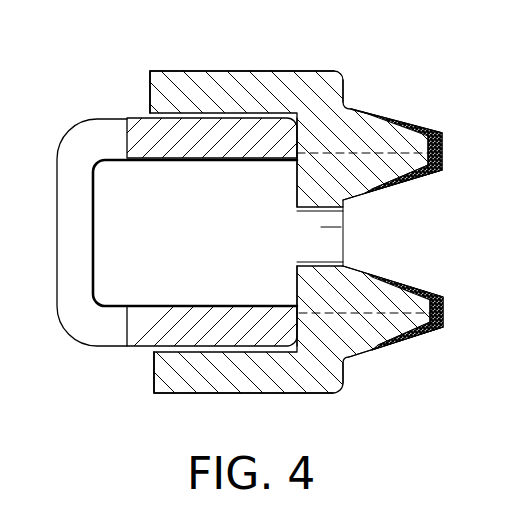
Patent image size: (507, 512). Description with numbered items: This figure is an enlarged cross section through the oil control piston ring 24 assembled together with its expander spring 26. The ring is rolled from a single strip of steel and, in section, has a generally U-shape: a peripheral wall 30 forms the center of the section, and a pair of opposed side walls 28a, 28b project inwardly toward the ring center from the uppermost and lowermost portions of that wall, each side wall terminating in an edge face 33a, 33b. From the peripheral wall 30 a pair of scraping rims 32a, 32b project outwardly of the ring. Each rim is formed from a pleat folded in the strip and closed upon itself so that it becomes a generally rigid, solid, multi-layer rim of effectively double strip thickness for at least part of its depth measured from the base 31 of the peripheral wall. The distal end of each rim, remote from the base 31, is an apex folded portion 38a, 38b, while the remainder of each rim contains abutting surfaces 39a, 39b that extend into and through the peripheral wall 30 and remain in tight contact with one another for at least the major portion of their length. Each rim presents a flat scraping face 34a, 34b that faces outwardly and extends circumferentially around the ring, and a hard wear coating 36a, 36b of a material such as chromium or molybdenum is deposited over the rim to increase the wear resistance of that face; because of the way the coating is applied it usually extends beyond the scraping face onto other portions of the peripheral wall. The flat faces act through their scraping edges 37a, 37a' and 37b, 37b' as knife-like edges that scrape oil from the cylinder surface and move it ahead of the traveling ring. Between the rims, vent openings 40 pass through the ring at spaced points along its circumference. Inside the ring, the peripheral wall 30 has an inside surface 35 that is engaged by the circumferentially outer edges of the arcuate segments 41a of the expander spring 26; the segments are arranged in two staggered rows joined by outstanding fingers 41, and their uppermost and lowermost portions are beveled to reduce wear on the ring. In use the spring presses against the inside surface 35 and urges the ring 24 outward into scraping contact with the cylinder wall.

The oil control piston ring 24 is at (349, 54).
The expander spring 26 is at (101, 200).
The side wall 28a is at (207, 84).
The side wall 28b is at (250, 383).
The peripheral wall 30 is at (347, 73).
The base of peripheral wall 31 is at (344, 96).
The scraping rim 32a is at (386, 135).
The scraping rim 32b is at (371, 294).
The edge face 33a is at (150, 86).
The edge face 33b is at (155, 381).
The flat scraping face 34a is at (442, 150).
The flat scraping face 34b is at (443, 318).
The inside surface 35 is at (297, 180).
The hard wear coating 36a is at (432, 173).
The hard wear coating 36b is at (442, 311).
The scraping edge 37a is at (429, 127).
The scraping edge 37a' is at (438, 193).
The scraping edge 37b is at (432, 300).
The scraping edge 37b' is at (440, 344).
The apex folded portion 38a is at (442, 162).
The apex folded portion 38b is at (408, 319).
The abutting surfaces 39a is at (323, 153).
The abutting surfaces 39b is at (347, 316).
The vent opening 40 is at (311, 223).
The finger 41 is at (70, 165).
The arcuate segment 41a is at (143, 150).